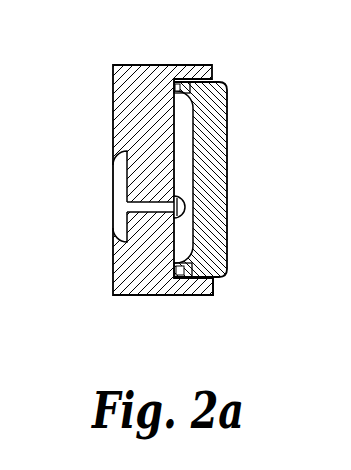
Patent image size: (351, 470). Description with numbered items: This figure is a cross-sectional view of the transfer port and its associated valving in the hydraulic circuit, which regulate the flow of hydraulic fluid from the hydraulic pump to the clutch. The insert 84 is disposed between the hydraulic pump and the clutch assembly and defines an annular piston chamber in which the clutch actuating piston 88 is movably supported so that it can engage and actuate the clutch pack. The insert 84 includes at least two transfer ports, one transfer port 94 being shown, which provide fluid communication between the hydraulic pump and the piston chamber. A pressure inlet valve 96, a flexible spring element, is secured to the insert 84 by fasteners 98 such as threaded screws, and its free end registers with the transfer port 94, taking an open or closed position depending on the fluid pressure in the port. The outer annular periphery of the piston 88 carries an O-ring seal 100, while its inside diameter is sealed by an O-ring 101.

The insert 84 is at (140, 163).
The transfer port 94 is at (117, 205).
The clutch actuating piston 88 is at (228, 128).
The O-ring seal 100 is at (184, 86).
The fasteners 98 is at (186, 198).
The pressure inlet valve 96 is at (184, 267).
The O-ring 101 is at (181, 296).